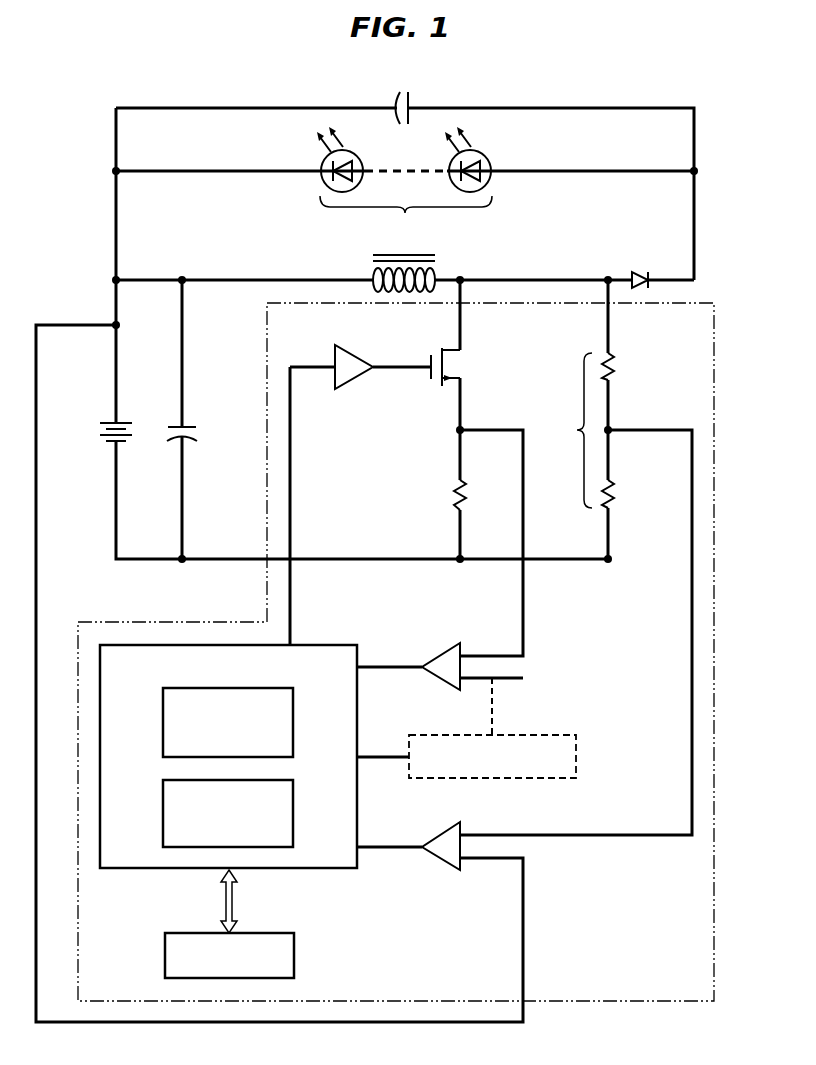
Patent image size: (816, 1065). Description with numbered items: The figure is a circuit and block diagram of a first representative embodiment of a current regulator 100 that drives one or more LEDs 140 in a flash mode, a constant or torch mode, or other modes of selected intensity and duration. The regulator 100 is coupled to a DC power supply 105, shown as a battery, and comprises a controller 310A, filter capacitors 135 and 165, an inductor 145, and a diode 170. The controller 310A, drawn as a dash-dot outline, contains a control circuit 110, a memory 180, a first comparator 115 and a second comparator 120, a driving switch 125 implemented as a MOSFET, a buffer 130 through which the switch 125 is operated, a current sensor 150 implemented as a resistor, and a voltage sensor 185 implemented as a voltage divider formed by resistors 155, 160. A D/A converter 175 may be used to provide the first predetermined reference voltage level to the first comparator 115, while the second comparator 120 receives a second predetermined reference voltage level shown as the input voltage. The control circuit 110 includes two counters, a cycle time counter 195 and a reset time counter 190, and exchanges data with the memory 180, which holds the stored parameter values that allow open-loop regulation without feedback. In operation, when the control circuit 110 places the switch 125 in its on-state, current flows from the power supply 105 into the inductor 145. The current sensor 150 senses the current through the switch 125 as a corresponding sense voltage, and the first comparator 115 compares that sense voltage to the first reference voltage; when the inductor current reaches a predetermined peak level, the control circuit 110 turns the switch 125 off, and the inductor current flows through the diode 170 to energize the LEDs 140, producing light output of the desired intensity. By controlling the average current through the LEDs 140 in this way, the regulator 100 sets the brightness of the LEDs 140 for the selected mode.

The current regulator 100 is at (651, 1046).
The DC power supply 105 is at (108, 421).
The control circuit 110 is at (228, 738).
The first comparator 115 is at (440, 688).
The second comparator 120 is at (442, 868).
The driving switch 125 is at (467, 369).
The buffer 130 is at (358, 383).
The filter capacitor 135 is at (410, 103).
The LEDs 140 is at (404, 184).
The inductor 145 is at (440, 272).
The current sensor 150 is at (451, 497).
The resistor 155 is at (620, 369).
The resistor 160 is at (620, 498).
The filter capacitor 165 is at (196, 427).
The diode 170 is at (641, 272).
The D/A converter 175 is at (578, 759).
The memory 180 is at (295, 956).
The voltage sensor 185 is at (612, 427).
The reset time counter 190 is at (295, 719).
The cycle time counter 195 is at (295, 811).
The controller 310A is at (714, 570).